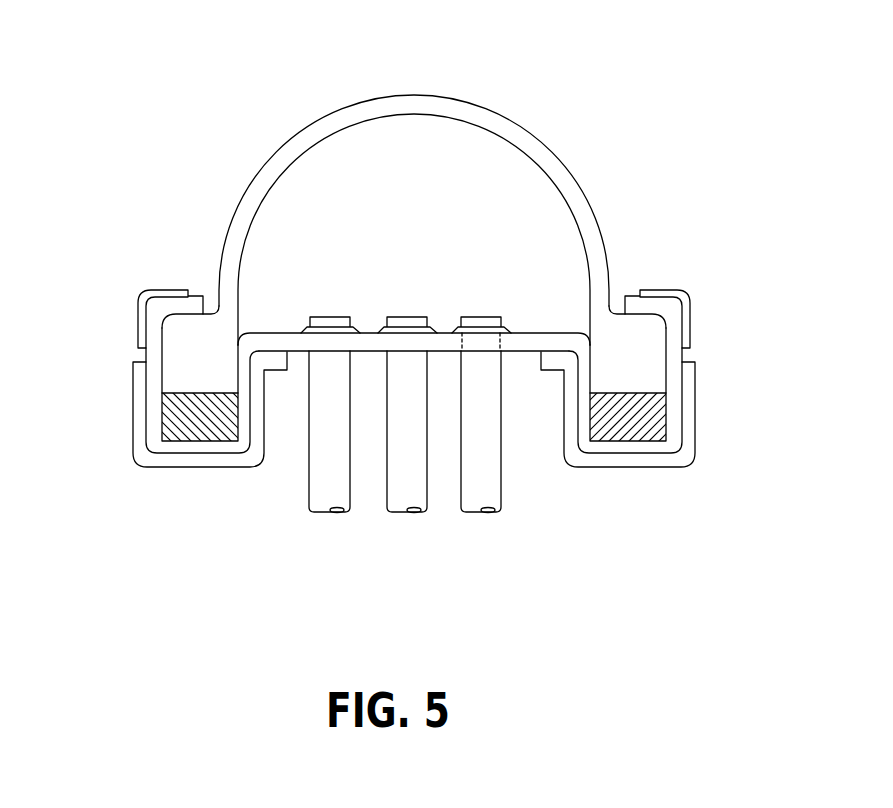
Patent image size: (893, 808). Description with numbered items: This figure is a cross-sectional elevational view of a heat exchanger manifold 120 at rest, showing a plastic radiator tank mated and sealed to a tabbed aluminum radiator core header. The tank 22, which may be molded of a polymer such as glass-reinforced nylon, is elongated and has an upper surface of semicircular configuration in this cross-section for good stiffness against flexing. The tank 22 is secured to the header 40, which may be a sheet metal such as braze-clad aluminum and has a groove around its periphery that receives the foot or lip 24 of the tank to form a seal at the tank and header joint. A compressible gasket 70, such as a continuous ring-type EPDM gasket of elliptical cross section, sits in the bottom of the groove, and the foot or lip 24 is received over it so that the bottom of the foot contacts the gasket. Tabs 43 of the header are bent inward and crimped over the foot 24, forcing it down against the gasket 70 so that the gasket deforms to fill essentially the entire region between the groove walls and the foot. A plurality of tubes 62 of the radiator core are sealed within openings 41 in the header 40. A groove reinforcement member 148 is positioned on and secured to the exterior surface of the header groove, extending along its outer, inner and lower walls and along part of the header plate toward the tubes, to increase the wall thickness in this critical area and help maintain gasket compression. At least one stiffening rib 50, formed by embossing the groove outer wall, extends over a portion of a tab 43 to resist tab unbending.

The manifold 120 is at (224, 92).
The tank 22 is at (495, 113).
The tank foot or lip 24 is at (208, 347).
The header 40 is at (366, 340).
The openings 41 is at (496, 342).
The tabs 43 is at (182, 302).
The stiffening rib 50 is at (137, 308).
The tubes 62 is at (492, 486).
The gasket 70 is at (187, 436).
The reinforcement member 148 is at (138, 450).